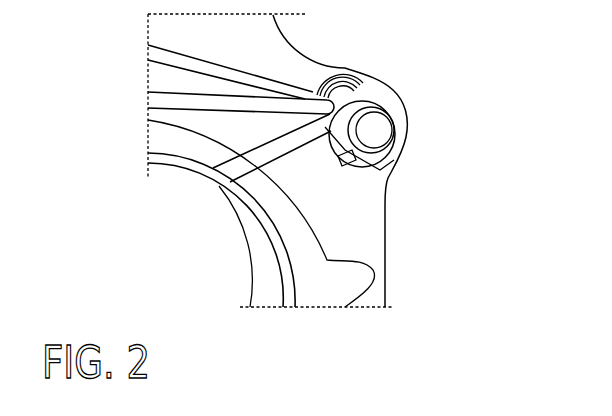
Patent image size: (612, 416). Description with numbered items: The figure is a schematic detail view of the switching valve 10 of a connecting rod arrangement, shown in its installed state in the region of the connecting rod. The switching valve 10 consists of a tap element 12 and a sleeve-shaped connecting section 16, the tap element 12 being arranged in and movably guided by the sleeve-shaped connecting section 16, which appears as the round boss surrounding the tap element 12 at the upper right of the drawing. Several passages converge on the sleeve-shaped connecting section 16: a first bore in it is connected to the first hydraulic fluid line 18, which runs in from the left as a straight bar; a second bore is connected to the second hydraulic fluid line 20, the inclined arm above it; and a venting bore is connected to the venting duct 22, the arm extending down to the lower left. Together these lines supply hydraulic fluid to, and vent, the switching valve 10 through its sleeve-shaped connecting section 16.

The switching valve 10 is at (420, 107).
The tap element 12 is at (385, 138).
The sleeve-shaped connecting section 16 is at (363, 92).
The first hydraulic fluid line 18 is at (183, 101).
The second hydraulic fluid line 20 is at (282, 88).
The venting duct 22 is at (277, 142).